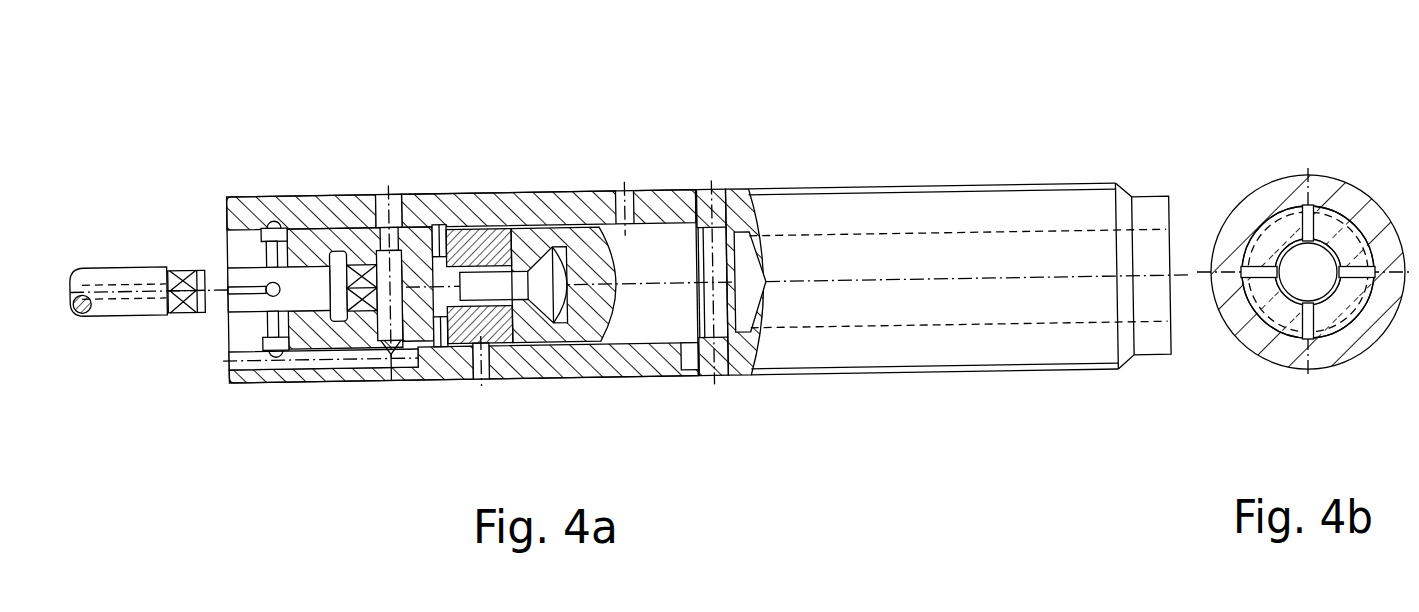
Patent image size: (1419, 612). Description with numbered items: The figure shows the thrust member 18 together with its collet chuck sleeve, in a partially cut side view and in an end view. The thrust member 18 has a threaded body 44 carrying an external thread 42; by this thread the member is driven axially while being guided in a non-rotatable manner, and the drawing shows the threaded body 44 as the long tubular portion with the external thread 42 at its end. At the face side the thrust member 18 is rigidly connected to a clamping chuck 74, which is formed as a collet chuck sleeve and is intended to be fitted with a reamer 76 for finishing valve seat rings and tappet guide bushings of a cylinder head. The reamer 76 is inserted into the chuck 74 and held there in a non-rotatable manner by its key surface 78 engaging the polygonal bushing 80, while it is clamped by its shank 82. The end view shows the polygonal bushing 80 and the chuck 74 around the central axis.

In FIG. 4A, the thrust member 18 is at (847, 182).
In FIG. 4A, the external thread 42 is at (1087, 178).
In FIG. 4A, the threaded body 44 is at (948, 210).
In FIG. 4A, the clamping chuck 74 is at (430, 226).
In FIG. 4B, the clamping chuck 74 is at (1343, 246).
In FIG. 4A, the reamer 76 is at (108, 262).
In FIG. 4A, the key surface 78 is at (188, 270).
In FIG. 4A, the polygonal bushing 80 is at (355, 196).
In FIG. 4B, the polygonal bushing 80 is at (1290, 287).
In FIG. 4A, the shank 82 is at (141, 267).